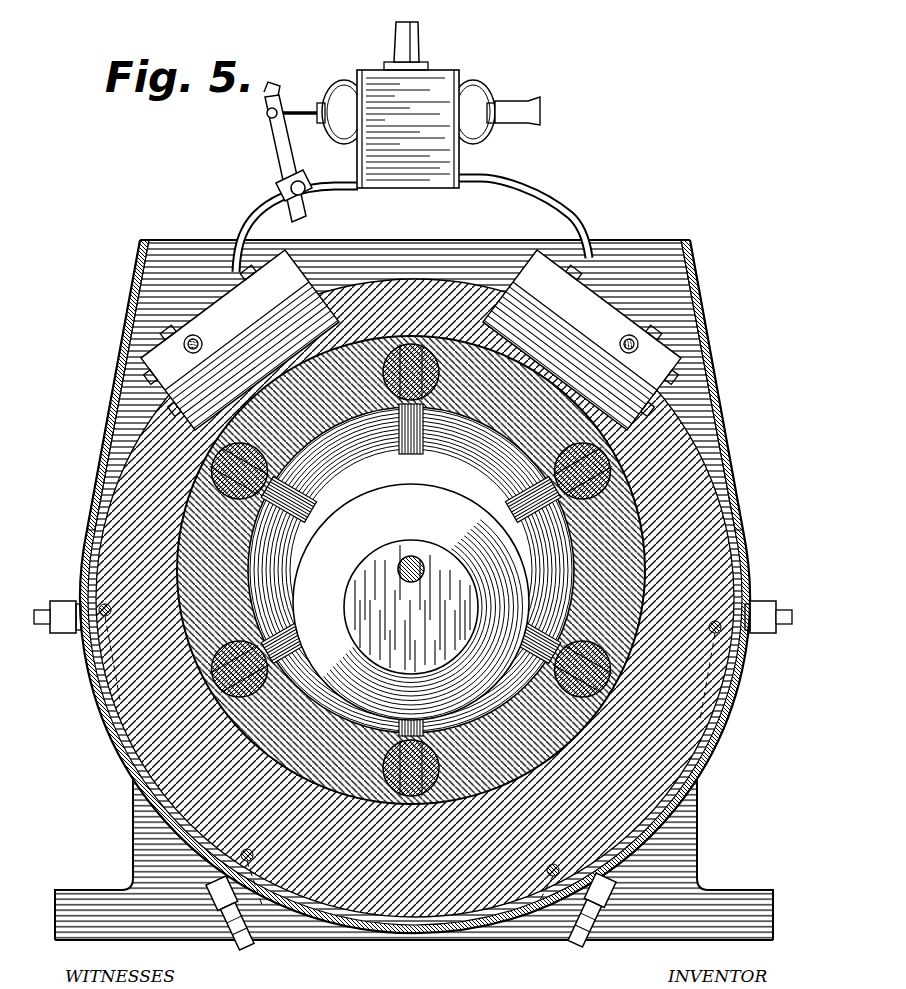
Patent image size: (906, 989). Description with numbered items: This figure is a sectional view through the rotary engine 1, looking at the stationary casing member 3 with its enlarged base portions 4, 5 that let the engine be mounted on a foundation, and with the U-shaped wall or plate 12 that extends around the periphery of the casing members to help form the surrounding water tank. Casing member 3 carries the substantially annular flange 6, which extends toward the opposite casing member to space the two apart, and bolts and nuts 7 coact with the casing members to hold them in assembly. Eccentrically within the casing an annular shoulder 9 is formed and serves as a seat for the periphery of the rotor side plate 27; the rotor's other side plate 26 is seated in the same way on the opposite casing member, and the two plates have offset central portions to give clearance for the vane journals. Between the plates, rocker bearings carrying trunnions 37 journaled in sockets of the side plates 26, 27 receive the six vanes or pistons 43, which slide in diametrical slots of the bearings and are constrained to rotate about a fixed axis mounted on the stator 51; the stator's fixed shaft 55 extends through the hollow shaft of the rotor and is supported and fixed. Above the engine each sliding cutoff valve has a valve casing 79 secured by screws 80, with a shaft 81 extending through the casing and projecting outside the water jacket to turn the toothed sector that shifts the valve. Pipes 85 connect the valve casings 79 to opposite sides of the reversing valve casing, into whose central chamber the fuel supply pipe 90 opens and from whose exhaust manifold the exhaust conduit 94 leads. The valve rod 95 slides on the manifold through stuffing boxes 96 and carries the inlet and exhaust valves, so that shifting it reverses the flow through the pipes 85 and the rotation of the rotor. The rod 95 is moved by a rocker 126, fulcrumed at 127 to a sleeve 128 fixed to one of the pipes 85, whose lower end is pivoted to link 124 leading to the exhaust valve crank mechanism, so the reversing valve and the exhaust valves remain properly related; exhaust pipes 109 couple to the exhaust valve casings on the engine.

The engine 1 is at (722, 442).
The casing member 3 is at (108, 500).
The enlarged base portion 4 is at (727, 890).
The enlarged base portion 5 is at (150, 848).
The annular flange 6 is at (710, 762).
The bolts and nuts 7 is at (742, 668).
The annular shoulder 9 is at (246, 760).
The U-shaped wall or plate 12 is at (385, 938).
The side plate 26 is at (502, 474).
The side plate 27 is at (523, 400).
The trunnion 37 is at (418, 338).
The vane or piston 43 is at (520, 515).
The stator 51 is at (508, 560).
The shaft 55 is at (406, 558).
The valve casing 79 is at (300, 284).
The screws 80 is at (672, 342).
The shaft 81 is at (212, 333).
The pipes 85 is at (248, 212).
The fuel supply pipe 90 is at (418, 43).
The exhaust conduit 94 is at (537, 106).
The valve rod 95 is at (297, 112).
The stuffing boxes 96 is at (312, 120).
The exhaust pipe 109 is at (52, 612).
The link 124 is at (269, 86).
The rocker 126 is at (282, 135).
The fulcrum 127 is at (284, 184).
The sleeve 128 is at (306, 196).